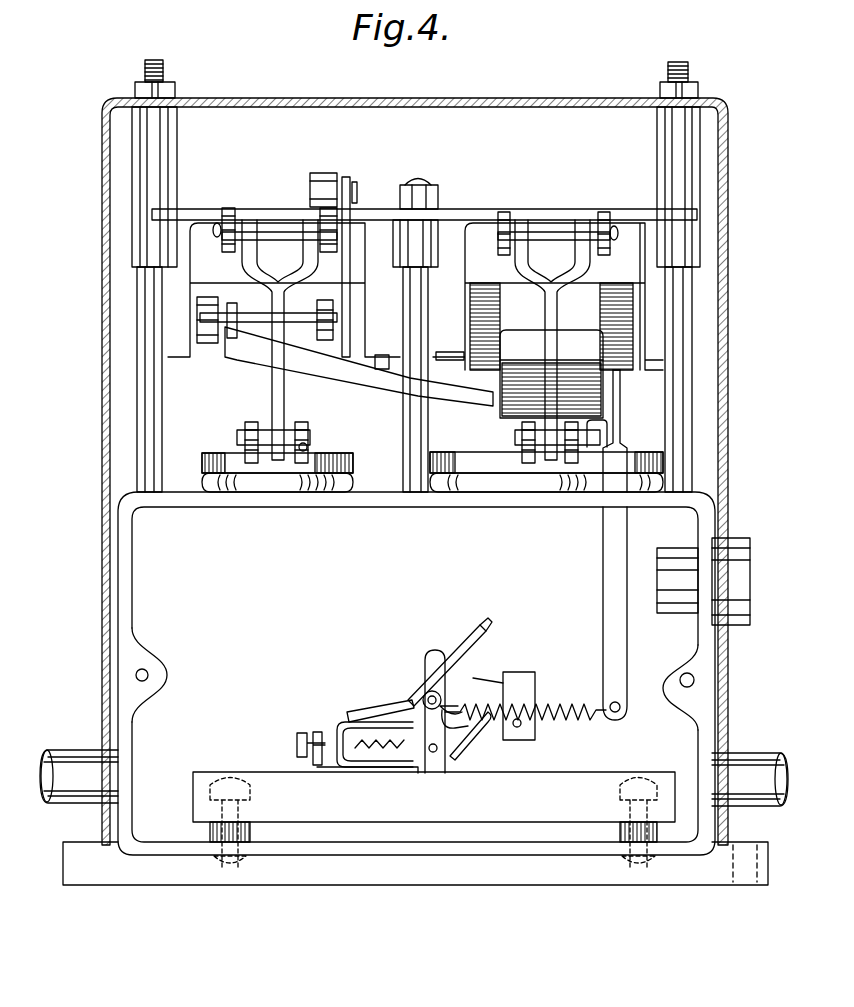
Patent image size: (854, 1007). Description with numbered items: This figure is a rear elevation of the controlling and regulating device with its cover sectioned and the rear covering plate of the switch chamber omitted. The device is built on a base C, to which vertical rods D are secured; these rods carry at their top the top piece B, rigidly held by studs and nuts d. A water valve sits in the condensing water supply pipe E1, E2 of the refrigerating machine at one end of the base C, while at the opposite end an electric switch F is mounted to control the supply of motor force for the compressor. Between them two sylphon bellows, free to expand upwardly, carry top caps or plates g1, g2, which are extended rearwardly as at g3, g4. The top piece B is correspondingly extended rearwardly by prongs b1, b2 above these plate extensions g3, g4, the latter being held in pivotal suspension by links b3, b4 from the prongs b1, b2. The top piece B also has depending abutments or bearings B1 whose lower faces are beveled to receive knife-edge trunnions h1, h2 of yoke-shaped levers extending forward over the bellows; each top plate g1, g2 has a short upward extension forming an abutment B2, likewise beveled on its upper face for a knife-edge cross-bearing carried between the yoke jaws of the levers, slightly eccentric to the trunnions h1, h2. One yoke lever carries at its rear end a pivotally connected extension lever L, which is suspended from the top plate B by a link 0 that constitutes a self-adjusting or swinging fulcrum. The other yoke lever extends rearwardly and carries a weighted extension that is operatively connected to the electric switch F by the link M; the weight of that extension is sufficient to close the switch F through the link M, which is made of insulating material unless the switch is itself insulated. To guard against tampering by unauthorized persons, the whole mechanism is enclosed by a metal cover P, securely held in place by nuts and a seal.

The metal cover P is at (541, 99).
The studs and nuts d is at (162, 164).
The top piece B is at (474, 217).
The link 0 is at (345, 266).
The depending abutments or bearings B1 is at (180, 302).
The vertical rods D is at (153, 364).
The prong b2 is at (227, 248).
The prong b1 is at (607, 248).
The link b4 is at (272, 407).
The extension lever L is at (357, 379).
The knife-edge trunnion h2 is at (383, 368).
The knife-edge trunnion h1 is at (447, 362).
The link b3 is at (550, 362).
The abutment B2 is at (237, 423).
The rearward extension of cap-plate g4 is at (305, 448).
The top cap or plate g2 is at (354, 456).
The rearward extension of cap-plate g3 is at (576, 442).
The top cap or plate g1 is at (633, 452).
The base C is at (384, 862).
The link M is at (612, 557).
The condensing water supply pipe E1 is at (79, 776).
The condensing water supply pipe E2 is at (750, 779).
The electric switch F is at (406, 692).